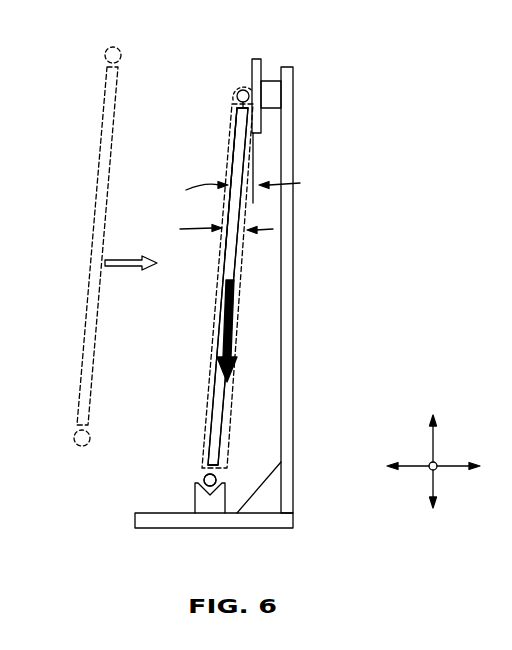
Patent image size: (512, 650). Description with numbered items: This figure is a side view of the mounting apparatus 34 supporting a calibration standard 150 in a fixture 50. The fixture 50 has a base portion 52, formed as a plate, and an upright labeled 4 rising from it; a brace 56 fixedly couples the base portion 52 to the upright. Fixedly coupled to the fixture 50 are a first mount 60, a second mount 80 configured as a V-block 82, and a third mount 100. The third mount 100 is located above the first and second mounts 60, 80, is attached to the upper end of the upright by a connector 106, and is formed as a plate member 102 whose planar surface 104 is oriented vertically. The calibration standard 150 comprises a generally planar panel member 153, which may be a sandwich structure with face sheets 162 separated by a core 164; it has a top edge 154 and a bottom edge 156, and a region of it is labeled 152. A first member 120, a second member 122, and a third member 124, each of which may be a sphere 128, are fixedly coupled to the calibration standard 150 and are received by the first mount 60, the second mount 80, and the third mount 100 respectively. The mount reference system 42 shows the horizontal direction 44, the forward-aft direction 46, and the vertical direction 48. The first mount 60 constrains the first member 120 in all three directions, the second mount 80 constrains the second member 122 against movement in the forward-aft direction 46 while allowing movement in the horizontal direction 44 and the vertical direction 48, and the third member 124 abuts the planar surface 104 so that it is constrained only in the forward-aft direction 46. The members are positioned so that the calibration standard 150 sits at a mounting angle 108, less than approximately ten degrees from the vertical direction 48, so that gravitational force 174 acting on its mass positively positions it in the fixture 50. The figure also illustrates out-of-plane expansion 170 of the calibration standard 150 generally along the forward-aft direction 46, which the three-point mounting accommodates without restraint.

The mounting assembly 4 is at (313, 277).
The mounting apparatus 34 is at (292, 67).
The mount reference system 42 is at (425, 445).
The horizontal direction 44 is at (440, 470).
The forward-aft direction 46 is at (404, 469).
The vertical direction 48 is at (437, 433).
The fixture 50 is at (191, 524).
The base portion 52 is at (150, 513).
The brace 56 is at (252, 500).
The first mount 60 is at (192, 498).
The second mount 80 is at (182, 513).
The V-block 82 is at (182, 513).
The third mount 100 is at (238, 109).
The plate member 102 is at (238, 109).
The planar surface 104 is at (254, 73).
The connector 106 is at (294, 62).
The mounting angle 108 is at (223, 187).
The first member 120 is at (205, 473).
The second member 122 is at (220, 478).
The third member 124 is at (237, 94).
The sphere 128 is at (262, 286).
The calibration standard 150 is at (98, 179).
The arm 152 is at (215, 343).
The panel member 153 is at (234, 144).
The top edge 154 is at (247, 106).
The bottom edge 156 is at (209, 471).
The face sheets 162 is at (215, 298).
The core 164 is at (229, 252).
The out-of-plane expansion 170 is at (205, 233).
The gravitational force 174 is at (236, 361).